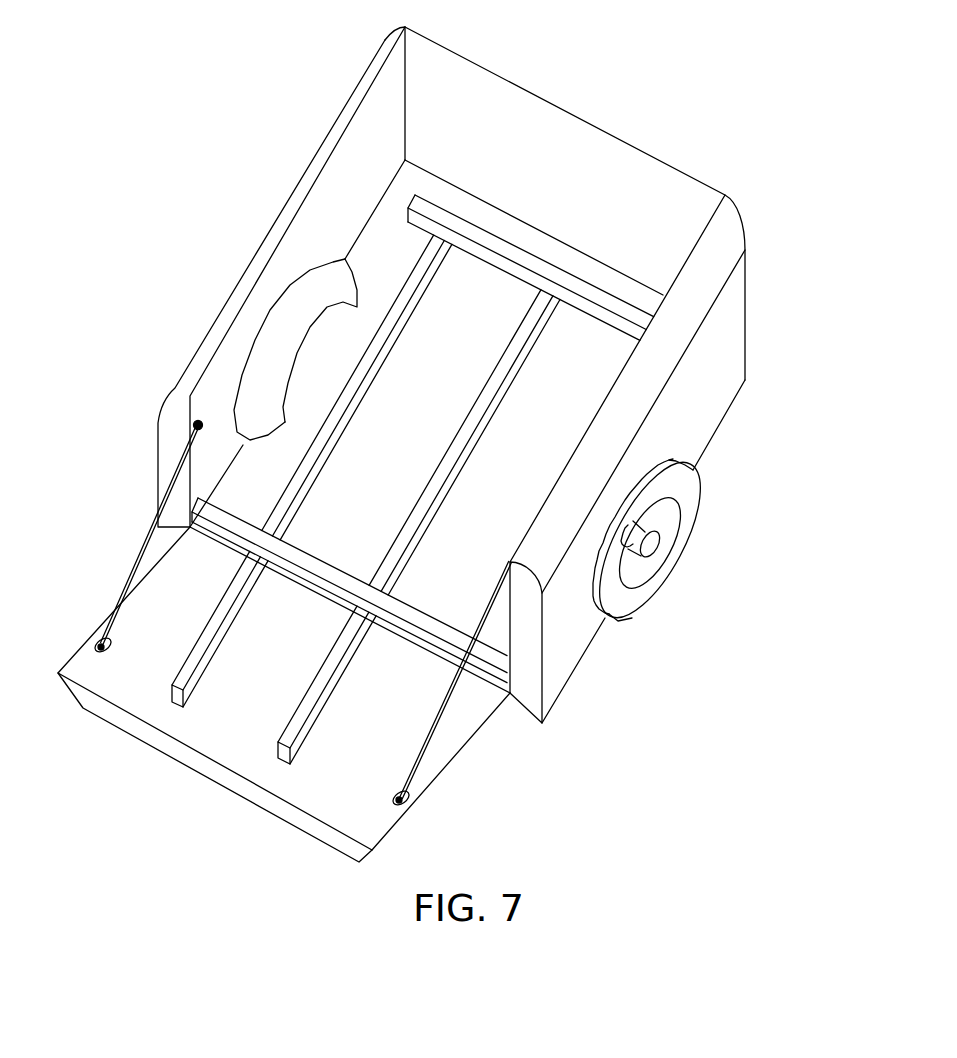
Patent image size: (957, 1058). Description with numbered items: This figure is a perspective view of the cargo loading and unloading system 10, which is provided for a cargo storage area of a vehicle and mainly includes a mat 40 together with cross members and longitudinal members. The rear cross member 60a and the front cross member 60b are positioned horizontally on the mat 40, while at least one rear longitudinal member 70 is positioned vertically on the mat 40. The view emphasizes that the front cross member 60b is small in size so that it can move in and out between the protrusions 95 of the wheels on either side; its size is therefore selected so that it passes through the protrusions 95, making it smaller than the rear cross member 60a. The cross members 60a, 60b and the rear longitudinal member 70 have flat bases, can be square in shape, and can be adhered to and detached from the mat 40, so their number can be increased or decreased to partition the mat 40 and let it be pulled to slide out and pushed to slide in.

The cargo loading and unloading system 10 is at (809, 154).
The mat 40 is at (565, 420).
The protrusions of wheels 95 is at (278, 340).
The front cross member 60b is at (633, 317).
The rear cross member 60a is at (500, 665).
The rear longitudinal member 70 is at (313, 718).